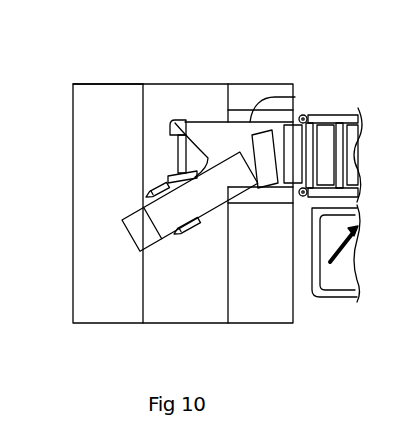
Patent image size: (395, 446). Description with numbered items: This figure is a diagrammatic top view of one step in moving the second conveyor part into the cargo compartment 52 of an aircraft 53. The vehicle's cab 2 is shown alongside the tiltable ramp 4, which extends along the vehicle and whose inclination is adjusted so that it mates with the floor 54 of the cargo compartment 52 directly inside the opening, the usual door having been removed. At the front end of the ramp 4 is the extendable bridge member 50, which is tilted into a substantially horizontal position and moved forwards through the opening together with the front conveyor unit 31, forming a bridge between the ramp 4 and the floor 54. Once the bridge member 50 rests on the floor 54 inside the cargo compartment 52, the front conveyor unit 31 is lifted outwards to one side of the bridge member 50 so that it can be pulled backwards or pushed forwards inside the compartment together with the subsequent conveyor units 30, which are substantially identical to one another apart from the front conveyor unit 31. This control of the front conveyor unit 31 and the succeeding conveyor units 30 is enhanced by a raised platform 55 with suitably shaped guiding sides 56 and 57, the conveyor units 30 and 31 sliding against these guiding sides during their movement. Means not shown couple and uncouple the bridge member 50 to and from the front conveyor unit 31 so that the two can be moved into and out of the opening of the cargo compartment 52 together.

The cab 2 is at (348, 288).
The ramp 4 is at (348, 122).
The conveyor units 30 is at (300, 97).
The front conveyor unit 31 is at (163, 212).
The bridge member 50 is at (247, 133).
The cargo compartment 52 is at (127, 303).
The aircraft 53 is at (106, 276).
The floor 54 is at (224, 95).
The raised platform 55 is at (197, 158).
The guiding side 56 is at (193, 148).
The guiding side 57 is at (190, 172).